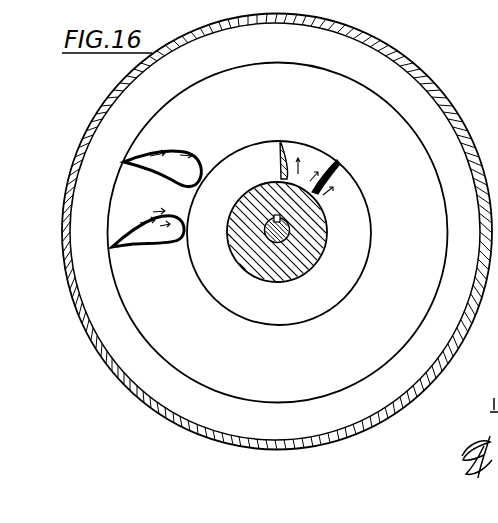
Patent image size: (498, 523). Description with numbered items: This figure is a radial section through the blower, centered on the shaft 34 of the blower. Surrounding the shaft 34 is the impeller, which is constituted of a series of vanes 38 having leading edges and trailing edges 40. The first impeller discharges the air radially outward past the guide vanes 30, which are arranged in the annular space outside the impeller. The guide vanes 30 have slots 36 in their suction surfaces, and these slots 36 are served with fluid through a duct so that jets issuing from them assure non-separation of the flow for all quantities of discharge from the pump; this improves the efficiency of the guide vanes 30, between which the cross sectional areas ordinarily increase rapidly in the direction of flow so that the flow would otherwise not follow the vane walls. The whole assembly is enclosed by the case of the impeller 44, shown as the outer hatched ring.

The case of the impeller 44 is at (383, 45).
The slots 36 is at (172, 148).
The guide vanes 30 is at (198, 158).
The trailing edges 40 is at (280, 141).
The vanes 38 is at (338, 172).
The shaft 34 is at (289, 231).